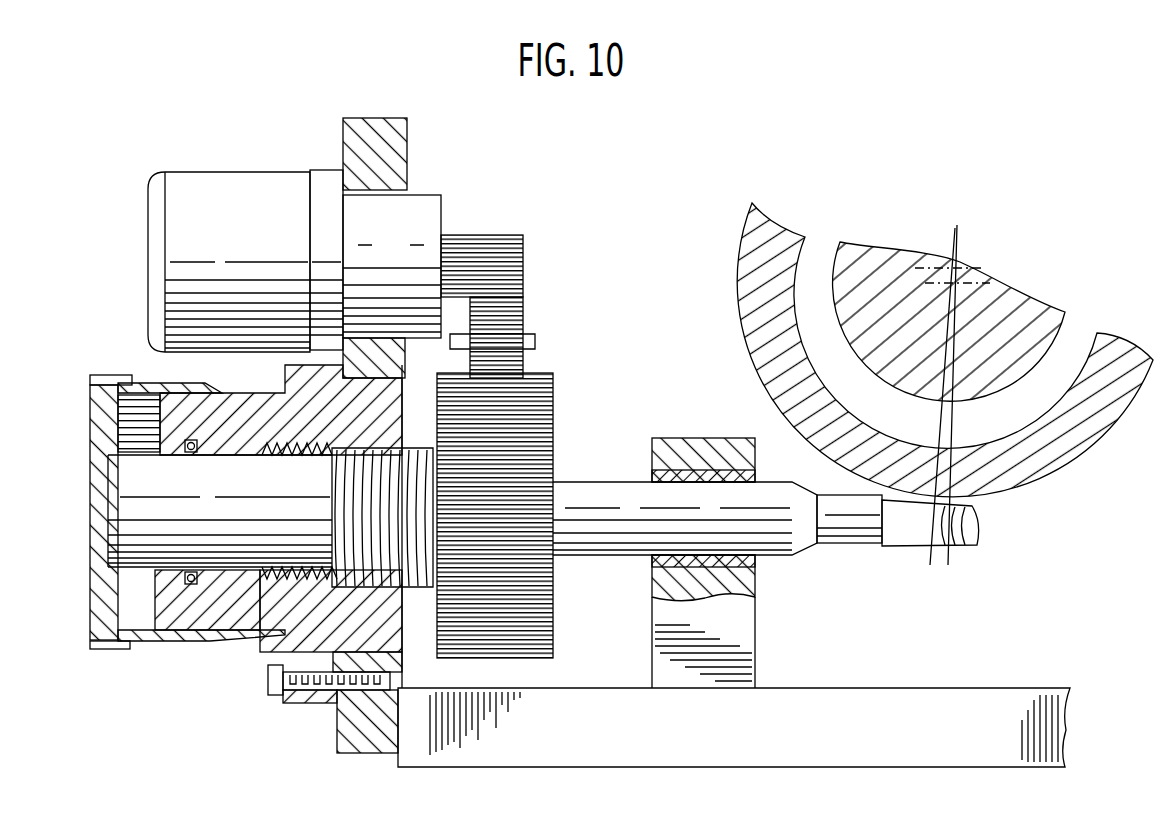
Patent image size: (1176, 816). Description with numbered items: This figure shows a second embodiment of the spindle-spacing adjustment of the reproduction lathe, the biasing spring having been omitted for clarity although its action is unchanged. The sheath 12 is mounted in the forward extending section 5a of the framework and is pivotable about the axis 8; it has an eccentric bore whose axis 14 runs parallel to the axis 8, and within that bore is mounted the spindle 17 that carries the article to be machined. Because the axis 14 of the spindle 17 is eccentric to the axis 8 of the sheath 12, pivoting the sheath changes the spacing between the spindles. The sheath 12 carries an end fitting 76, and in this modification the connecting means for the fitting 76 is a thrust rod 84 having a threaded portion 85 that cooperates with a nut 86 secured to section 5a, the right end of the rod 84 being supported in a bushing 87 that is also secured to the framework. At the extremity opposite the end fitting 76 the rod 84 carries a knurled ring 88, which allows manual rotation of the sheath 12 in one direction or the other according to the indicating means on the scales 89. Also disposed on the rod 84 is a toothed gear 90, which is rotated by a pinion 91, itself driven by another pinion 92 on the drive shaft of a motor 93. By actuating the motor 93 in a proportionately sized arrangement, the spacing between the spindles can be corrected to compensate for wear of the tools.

The forward extending section of the framework 5a is at (348, 726).
The axis 8 is at (957, 262).
The sheath 12 is at (738, 330).
The axis of the eccentric bore 14 is at (958, 283).
The spindle 17 is at (905, 335).
The end fitting 76 is at (981, 522).
The thrust rod 84 is at (835, 541).
The threaded portion 85 is at (425, 452).
The nut 86 is at (298, 636).
The bushing 87 is at (653, 562).
The knurled ring 88 is at (118, 650).
The scales 89 is at (165, 641).
The toothed gear 90 is at (555, 440).
The pinion 91 is at (523, 322).
The pinion 92 is at (521, 248).
The motor 93 is at (243, 197).